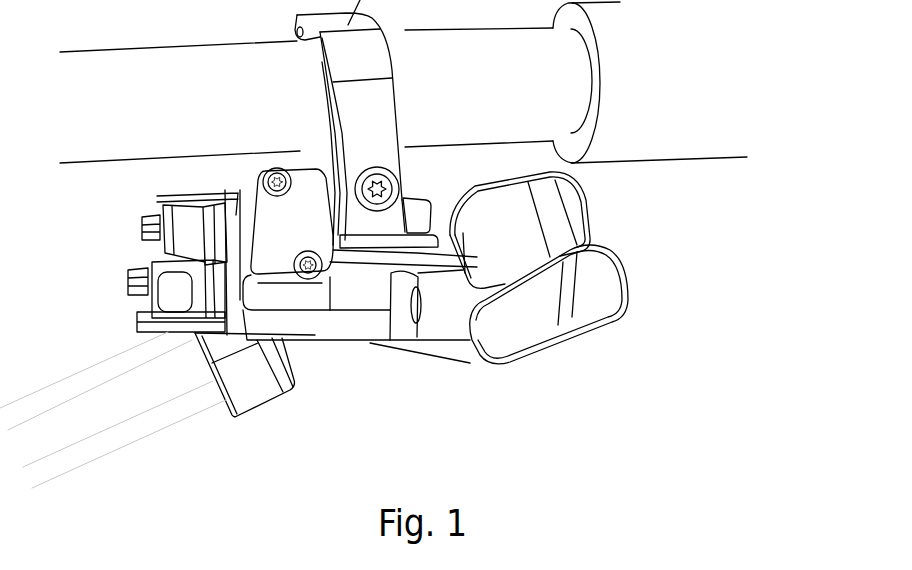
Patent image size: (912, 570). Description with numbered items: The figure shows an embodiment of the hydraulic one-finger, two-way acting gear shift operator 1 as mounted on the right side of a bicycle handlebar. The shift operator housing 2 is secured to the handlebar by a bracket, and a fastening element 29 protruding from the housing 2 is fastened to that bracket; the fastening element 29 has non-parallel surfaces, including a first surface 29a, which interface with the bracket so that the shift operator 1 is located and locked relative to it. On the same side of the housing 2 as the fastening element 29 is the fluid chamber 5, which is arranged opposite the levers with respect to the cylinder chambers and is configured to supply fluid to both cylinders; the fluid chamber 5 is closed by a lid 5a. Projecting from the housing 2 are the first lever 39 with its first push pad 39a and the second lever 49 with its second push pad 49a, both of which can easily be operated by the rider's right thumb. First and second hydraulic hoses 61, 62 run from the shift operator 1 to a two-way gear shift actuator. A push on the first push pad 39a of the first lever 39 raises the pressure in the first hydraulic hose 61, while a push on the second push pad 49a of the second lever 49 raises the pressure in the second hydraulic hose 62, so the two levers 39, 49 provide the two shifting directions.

The hydraulic one-finger gear shift operator 1 is at (66, 273).
The shift operator housing 2 is at (377, 313).
The fluid chamber 5 is at (298, 310).
The lid 5a is at (303, 240).
The fastening element 29 is at (440, 211).
The first surface 29a is at (408, 228).
The first lever 39 is at (606, 230).
The first push pad 39a is at (577, 213).
The second lever 49 is at (631, 304).
The second push pad 49a is at (607, 273).
The first hydraulic hose 61 is at (78, 373).
The second hydraulic hose 62 is at (143, 410).